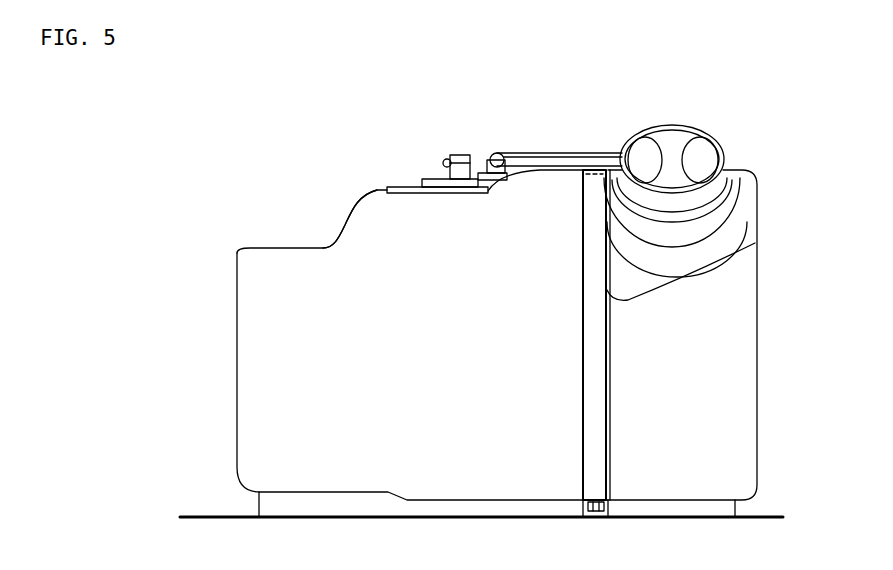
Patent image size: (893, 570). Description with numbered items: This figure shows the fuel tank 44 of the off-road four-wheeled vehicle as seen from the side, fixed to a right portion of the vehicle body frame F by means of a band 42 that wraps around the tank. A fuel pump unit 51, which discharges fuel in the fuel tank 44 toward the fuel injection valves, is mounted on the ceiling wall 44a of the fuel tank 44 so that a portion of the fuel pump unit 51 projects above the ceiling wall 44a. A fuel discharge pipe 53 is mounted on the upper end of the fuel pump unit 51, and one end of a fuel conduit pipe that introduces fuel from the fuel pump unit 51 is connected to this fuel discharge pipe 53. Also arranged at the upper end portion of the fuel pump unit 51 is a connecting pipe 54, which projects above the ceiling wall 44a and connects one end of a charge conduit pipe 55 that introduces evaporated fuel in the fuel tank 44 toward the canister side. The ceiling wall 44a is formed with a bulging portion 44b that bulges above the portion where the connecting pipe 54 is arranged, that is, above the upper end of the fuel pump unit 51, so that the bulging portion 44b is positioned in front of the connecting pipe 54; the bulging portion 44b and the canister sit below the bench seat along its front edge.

The vehicle body frame F is at (228, 517).
The band 42 is at (600, 334).
The fuel tank 44 is at (460, 364).
The ceiling wall 44a is at (382, 187).
The bulging portion 44b is at (555, 165).
The fuel pump unit 51 is at (435, 180).
The fuel discharge pipe 53 is at (460, 155).
The connecting pipe 54 is at (489, 152).
The charge conduit pipe 55 is at (604, 160).